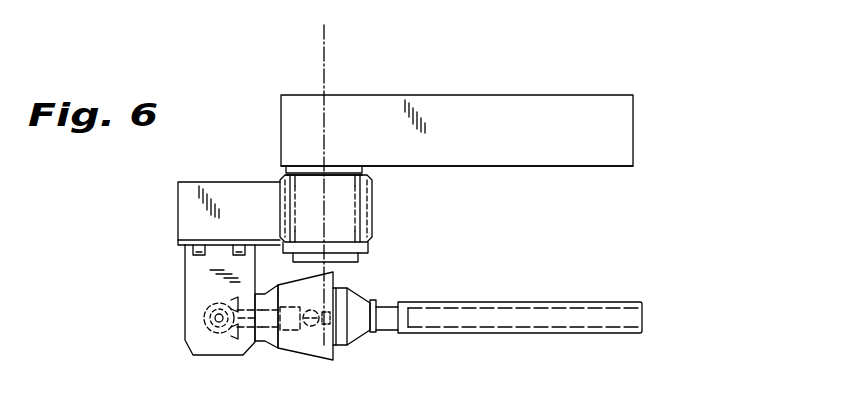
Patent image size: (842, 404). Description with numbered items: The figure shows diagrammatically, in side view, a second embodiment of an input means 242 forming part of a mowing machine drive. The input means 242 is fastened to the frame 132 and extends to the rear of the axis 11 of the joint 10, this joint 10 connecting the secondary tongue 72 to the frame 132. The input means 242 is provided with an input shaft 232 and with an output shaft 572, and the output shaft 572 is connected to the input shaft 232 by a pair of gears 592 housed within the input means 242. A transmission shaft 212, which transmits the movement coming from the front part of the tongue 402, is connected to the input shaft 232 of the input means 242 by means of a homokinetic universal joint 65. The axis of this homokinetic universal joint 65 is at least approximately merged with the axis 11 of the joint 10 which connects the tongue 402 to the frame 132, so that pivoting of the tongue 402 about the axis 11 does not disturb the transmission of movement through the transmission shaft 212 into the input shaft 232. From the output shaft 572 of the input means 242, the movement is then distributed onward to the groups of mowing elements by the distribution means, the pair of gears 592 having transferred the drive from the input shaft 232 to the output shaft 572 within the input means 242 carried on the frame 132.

The axis 11 is at (324, 44).
The tongue 402 is at (553, 96).
The secondary tongue 72 is at (538, 164).
The joint 10 is at (285, 200).
The frame 132 is at (190, 218).
The pair of gears 592 is at (204, 316).
The input means 242 is at (187, 345).
The output shaft 572 is at (219, 322).
The input shaft 232 is at (268, 322).
The homokinetic universal joint 65 is at (327, 330).
The transmission shaft 212 is at (470, 321).